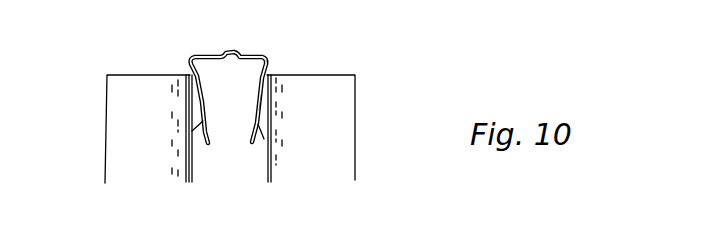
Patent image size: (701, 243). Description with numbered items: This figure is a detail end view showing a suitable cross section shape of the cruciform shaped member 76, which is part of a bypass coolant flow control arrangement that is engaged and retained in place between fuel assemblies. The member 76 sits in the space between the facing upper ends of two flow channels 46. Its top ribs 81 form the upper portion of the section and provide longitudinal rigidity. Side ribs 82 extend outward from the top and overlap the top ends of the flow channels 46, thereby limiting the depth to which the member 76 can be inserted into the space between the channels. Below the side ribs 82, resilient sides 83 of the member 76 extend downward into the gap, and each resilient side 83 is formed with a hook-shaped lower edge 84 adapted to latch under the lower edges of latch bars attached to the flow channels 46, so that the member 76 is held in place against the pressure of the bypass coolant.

The flow channel 46 is at (140, 75).
The cruciform shaped member 76 is at (333, 38).
The top rib 81 is at (230, 51).
The side rib 82 is at (271, 63).
The resilient side 83 is at (262, 110).
The hook-shaped lower edge 84 is at (253, 143).